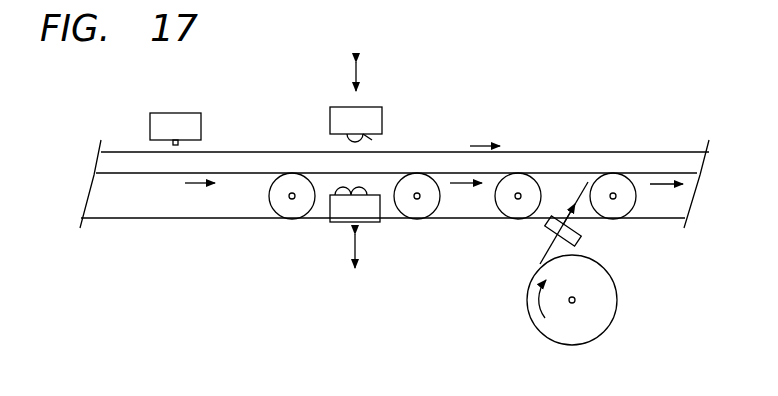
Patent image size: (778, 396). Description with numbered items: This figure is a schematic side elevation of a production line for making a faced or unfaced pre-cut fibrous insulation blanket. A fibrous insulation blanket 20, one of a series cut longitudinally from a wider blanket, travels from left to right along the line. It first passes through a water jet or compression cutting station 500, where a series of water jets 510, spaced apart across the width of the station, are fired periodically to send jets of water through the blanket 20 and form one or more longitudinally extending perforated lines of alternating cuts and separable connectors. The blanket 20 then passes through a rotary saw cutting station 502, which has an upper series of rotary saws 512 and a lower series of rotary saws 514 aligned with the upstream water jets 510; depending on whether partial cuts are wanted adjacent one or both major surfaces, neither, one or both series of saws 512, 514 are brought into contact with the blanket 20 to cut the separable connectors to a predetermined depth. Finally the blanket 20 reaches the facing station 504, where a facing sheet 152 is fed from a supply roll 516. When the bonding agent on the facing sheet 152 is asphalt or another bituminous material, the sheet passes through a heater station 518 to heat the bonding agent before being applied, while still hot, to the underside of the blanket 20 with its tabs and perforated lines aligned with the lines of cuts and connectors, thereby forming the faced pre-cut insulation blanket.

The fibrous insulation blanket 20 is at (228, 163).
The cutting station 500 is at (217, 106).
The rotary saw cutting station 502 is at (392, 107).
The facing station 504 is at (643, 232).
The water jets 510 is at (151, 141).
The upper series of rotary saws 512 is at (372, 140).
The lower series of rotary saws 514 is at (337, 189).
The supply roll 516 is at (598, 326).
The heater station 518 is at (583, 245).
The facing sheet 152 is at (545, 262).